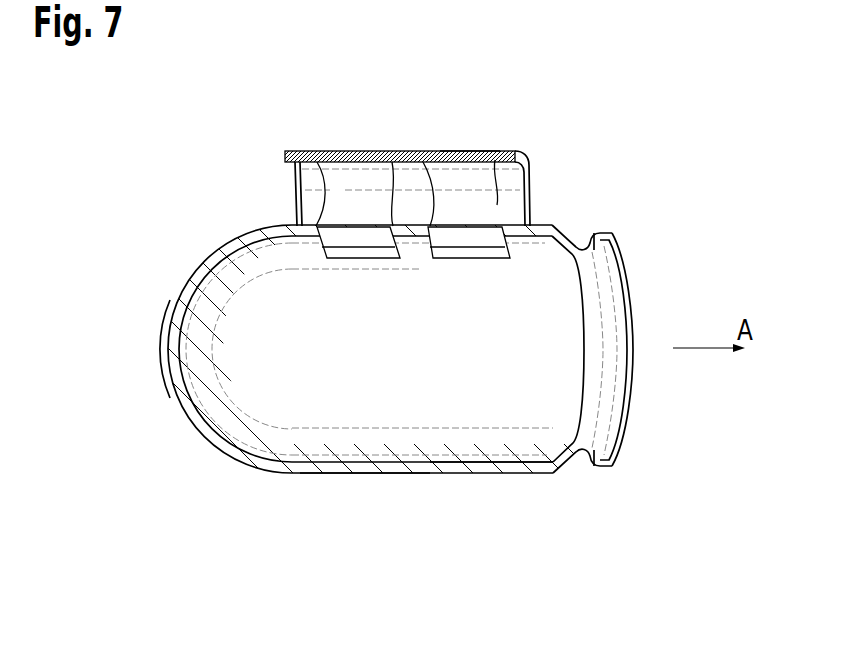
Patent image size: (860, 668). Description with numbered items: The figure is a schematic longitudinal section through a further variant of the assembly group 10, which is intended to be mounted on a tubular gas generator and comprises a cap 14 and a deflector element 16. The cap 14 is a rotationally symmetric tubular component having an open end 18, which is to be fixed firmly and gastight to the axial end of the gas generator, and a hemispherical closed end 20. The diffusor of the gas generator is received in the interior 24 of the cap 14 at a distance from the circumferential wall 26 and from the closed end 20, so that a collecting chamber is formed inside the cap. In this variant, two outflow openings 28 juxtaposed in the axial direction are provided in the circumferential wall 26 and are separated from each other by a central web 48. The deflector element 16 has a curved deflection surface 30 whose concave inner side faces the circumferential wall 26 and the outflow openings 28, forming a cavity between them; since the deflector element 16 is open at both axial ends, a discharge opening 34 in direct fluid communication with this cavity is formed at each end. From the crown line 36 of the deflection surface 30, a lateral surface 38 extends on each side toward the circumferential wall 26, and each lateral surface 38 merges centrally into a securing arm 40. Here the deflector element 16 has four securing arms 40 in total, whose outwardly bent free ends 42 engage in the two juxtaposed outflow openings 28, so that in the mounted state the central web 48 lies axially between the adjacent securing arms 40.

The assembly group 10 is at (140, 203).
The cap 14 is at (200, 493).
The deflector element 16 is at (545, 135).
The open end 18 is at (622, 307).
The closed end 20 is at (173, 347).
The interior 24 is at (443, 457).
The circumferential wall 26 is at (367, 467).
The outflow opening 28 is at (306, 151).
The deflection surface 30 is at (462, 151).
The discharge opening 34 is at (292, 192).
The crown line 36 is at (352, 151).
The lateral surface 38 is at (510, 151).
The securing arm 40 is at (337, 240).
The bent free end 42 is at (360, 262).
The central web 48 is at (393, 151).